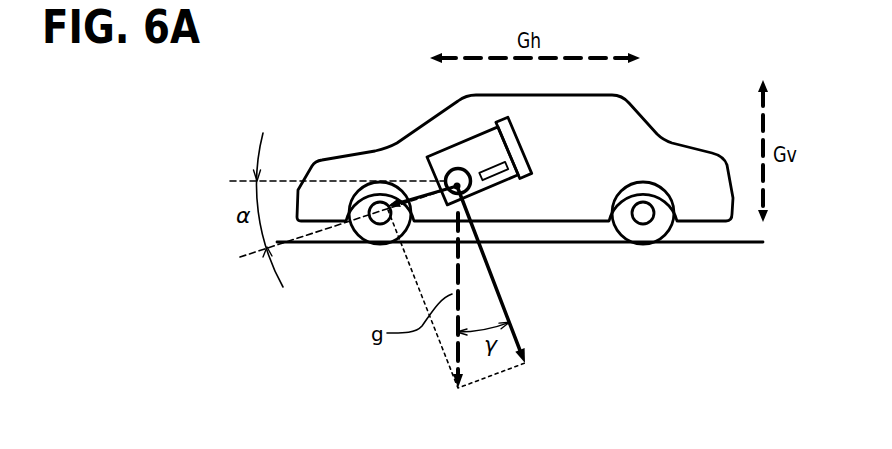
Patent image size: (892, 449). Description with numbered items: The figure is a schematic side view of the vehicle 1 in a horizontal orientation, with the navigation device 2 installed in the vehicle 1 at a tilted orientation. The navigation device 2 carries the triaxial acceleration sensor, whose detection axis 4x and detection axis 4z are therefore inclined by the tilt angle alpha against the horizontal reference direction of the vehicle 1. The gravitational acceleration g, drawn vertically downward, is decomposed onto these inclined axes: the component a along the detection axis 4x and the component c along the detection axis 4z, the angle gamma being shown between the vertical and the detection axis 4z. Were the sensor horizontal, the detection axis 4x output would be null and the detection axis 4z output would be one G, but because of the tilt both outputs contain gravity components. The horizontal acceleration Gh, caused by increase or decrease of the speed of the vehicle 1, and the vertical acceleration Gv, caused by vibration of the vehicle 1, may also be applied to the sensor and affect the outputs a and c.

The vehicle 1 is at (650, 126).
The navigation device 2 is at (458, 144).
The detection axis 4x is at (429, 186).
The detection axis 4z is at (497, 290).